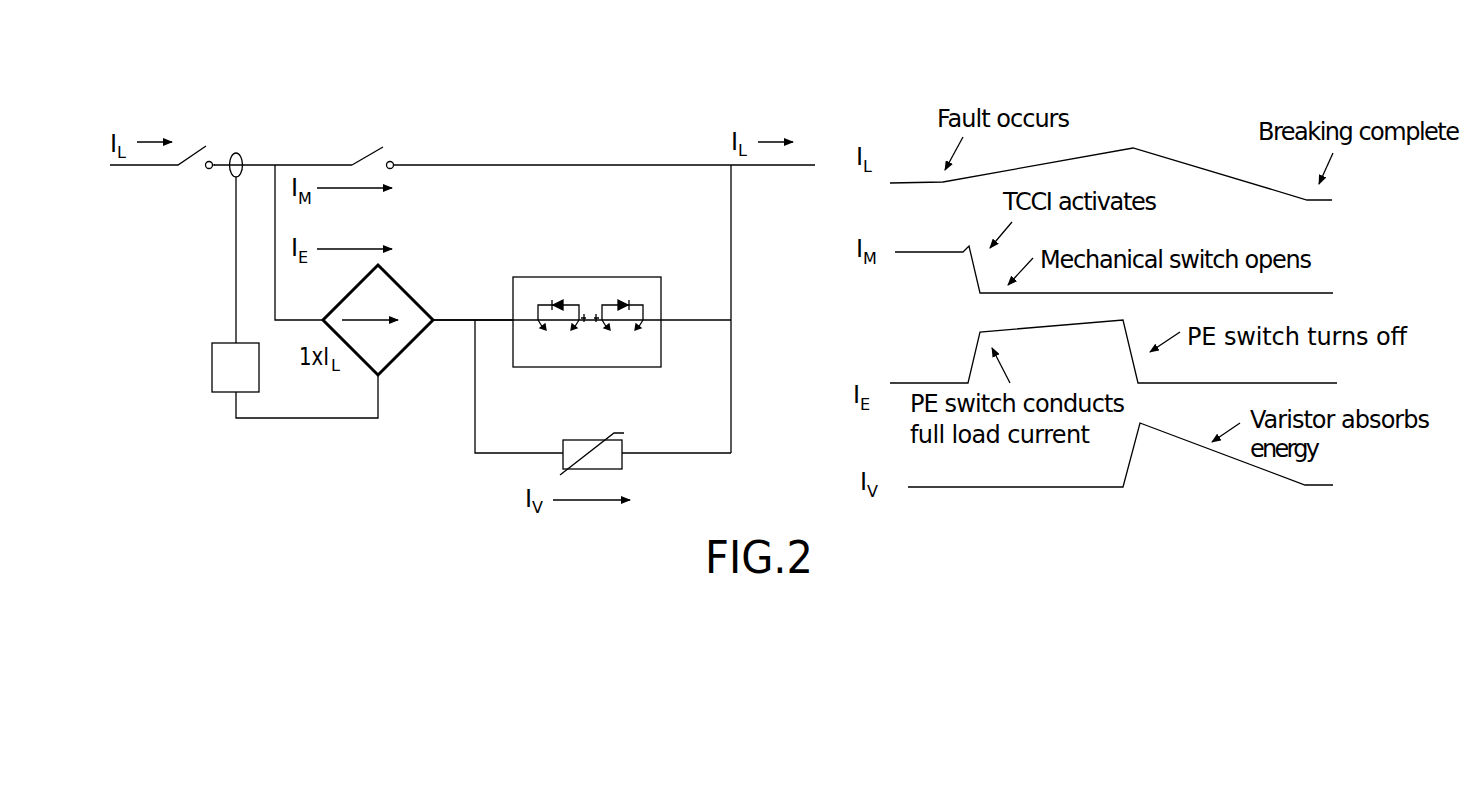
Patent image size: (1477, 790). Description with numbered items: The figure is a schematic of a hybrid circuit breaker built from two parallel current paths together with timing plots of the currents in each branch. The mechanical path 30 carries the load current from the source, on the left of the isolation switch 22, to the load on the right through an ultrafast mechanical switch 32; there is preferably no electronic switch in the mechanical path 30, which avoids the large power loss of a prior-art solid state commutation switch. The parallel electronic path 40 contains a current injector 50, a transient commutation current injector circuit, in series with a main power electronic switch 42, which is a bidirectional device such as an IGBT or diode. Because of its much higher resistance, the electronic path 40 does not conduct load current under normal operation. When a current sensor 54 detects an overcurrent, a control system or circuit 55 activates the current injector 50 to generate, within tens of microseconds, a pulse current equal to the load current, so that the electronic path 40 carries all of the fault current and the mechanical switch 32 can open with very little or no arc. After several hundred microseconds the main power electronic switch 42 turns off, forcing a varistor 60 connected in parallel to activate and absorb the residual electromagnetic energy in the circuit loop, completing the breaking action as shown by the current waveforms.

The isolation switch 22 is at (208, 145).
The current sensor 54 is at (238, 154).
The ultrafast mechanical switch 32 is at (385, 145).
The mechanical path 30 is at (458, 165).
The electronic path 40 is at (450, 320).
The main power electronic switch 42 is at (608, 277).
The current injector 50 is at (393, 360).
The control system or circuit 55 is at (212, 360).
The varistor 60 is at (622, 445).